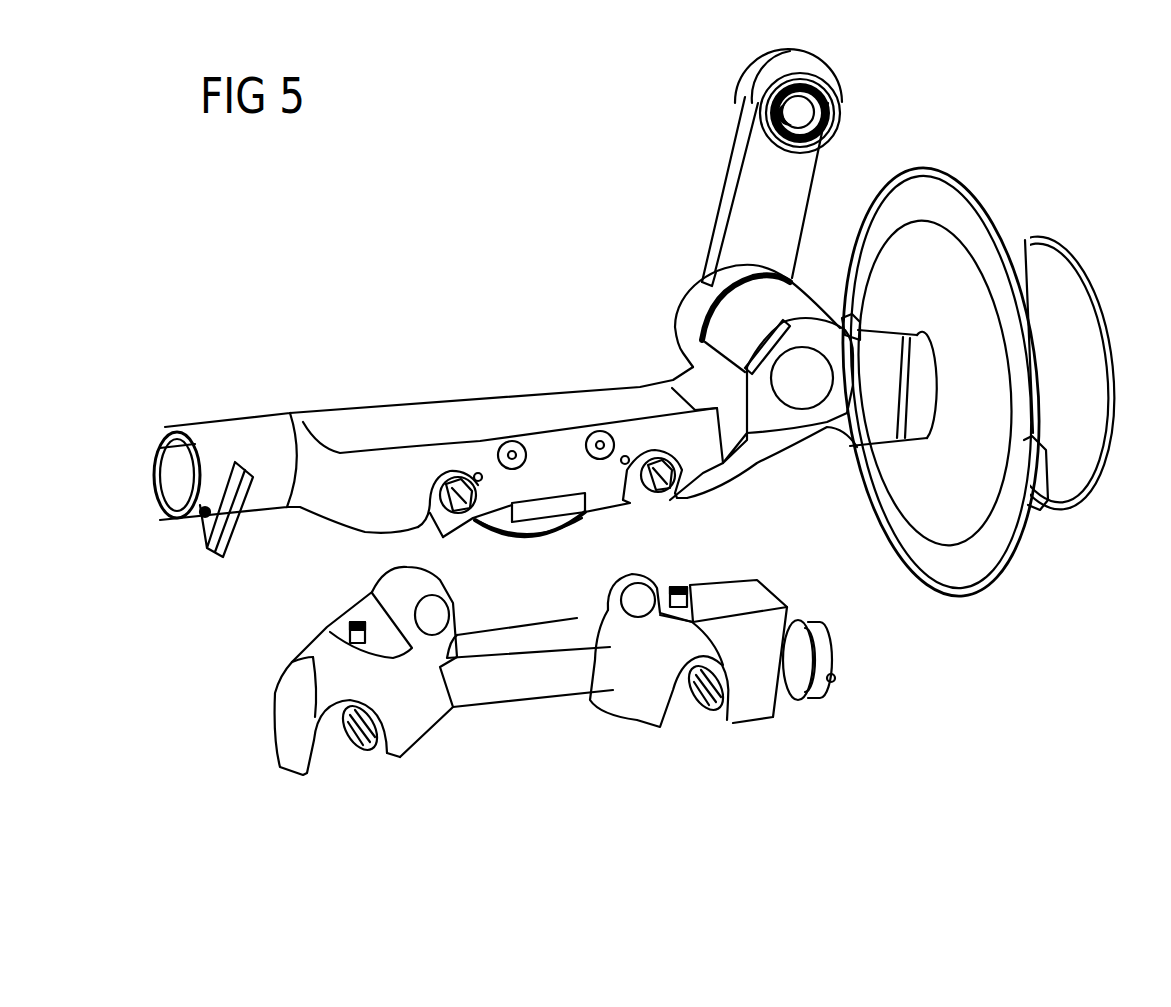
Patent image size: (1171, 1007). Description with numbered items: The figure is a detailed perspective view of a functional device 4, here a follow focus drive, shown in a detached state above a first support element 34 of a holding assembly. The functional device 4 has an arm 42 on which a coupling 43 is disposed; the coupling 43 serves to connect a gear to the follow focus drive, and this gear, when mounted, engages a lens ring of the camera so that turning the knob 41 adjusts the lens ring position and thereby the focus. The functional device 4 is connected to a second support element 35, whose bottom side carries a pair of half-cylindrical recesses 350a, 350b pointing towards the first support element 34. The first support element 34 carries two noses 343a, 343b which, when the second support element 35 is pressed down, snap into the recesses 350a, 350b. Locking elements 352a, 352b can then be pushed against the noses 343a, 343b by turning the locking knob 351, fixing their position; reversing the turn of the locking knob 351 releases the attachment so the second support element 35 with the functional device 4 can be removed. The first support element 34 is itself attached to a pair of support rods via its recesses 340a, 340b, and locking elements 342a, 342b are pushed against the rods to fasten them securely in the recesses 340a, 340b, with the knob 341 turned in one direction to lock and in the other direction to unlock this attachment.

The functional device 4 is at (941, 142).
The knob 41 is at (993, 218).
The arm 42 is at (796, 182).
The coupling 43 is at (797, 68).
The second support element 35 is at (452, 457).
The recess 350a is at (672, 495).
The recess 350b is at (443, 535).
The locking knob 351 is at (513, 535).
The locking element 352a is at (628, 482).
The locking element 352b is at (460, 487).
The first support element 34 is at (525, 683).
The recess 340a is at (673, 708).
The recess 340b is at (313, 740).
The knob 341 is at (820, 695).
The locking element 342a is at (708, 717).
The locking element 342b is at (357, 747).
The nose 343a is at (613, 612).
The nose 343b is at (450, 610).